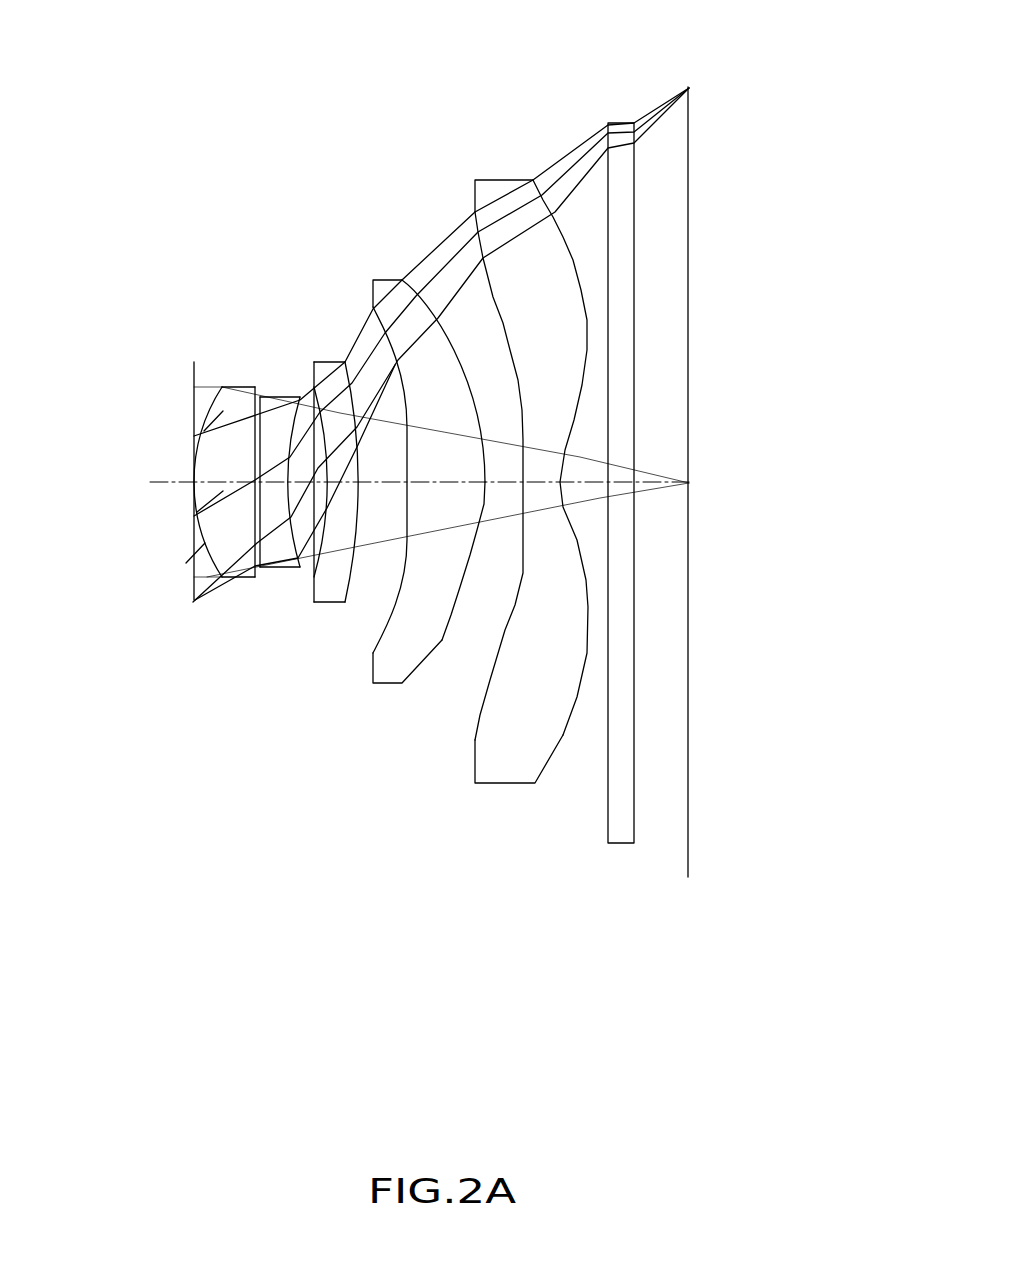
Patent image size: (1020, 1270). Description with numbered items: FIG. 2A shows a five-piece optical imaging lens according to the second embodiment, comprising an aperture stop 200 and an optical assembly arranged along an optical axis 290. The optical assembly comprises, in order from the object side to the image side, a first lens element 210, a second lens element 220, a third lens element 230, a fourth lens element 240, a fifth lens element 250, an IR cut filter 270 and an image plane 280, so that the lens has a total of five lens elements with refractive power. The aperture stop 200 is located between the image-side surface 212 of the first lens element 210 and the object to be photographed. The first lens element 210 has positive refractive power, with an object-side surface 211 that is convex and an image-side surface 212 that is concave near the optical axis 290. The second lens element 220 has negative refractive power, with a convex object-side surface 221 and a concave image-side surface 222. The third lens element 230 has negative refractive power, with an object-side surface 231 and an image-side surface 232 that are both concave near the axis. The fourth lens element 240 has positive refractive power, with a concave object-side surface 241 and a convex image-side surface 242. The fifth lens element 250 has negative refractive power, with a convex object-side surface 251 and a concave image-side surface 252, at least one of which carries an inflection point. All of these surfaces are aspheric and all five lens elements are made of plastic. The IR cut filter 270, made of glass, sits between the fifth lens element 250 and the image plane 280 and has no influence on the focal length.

The aperture stop 200 is at (225, 383).
The first lens element 210 is at (242, 383).
The object-side surface of the first lens element 211 is at (207, 543).
The image-side surface of the first lens element 212 is at (255, 547).
The second lens element 220 is at (282, 395).
The object-side surface of the second lens element 221 is at (247, 562).
The image-side surface of the second lens element 222 is at (280, 582).
The third lens element 230 is at (330, 360).
The object-side surface of the third lens element 231 is at (323, 545).
The image-side surface of the third lens element 232 is at (352, 592).
The fourth lens element 240 is at (388, 278).
The object-side surface of the fourth lens element 241 is at (385, 628).
The image-side surface of the fourth lens element 242 is at (440, 648).
The fifth lens element 250 is at (497, 176).
The object-side surface of the fifth lens element 251 is at (475, 742).
The image-side surface of the fifth lens element 252 is at (563, 740).
The IR cut filter 270 is at (612, 121).
The image plane 280 is at (689, 770).
The optical axis 290 is at (170, 482).